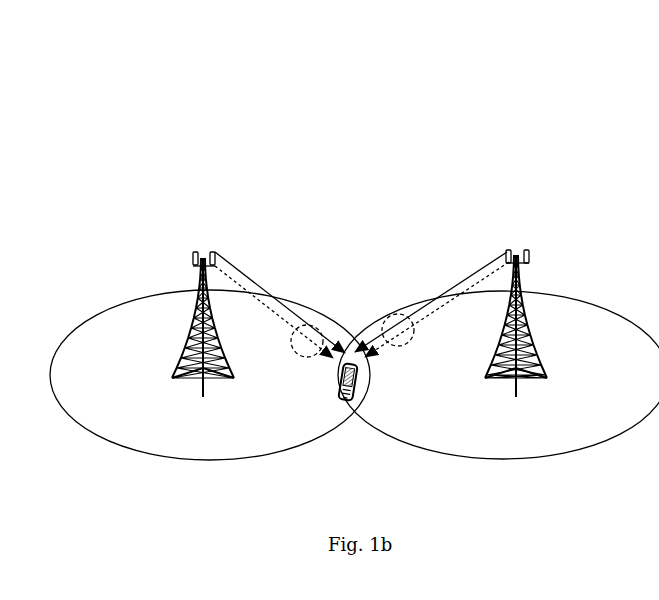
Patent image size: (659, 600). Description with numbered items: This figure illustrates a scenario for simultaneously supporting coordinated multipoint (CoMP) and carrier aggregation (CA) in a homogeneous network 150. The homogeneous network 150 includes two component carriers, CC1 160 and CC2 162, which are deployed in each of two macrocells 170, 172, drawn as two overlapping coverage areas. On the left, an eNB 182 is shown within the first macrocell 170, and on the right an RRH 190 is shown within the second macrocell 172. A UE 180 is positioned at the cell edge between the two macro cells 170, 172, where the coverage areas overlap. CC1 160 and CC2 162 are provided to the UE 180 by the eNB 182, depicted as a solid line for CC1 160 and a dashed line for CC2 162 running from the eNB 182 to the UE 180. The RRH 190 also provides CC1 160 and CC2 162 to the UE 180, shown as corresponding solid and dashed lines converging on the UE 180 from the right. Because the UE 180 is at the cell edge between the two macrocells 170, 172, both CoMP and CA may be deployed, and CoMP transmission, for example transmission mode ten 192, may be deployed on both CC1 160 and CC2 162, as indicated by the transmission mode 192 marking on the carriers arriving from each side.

The homogeneous network 150 is at (157, 110).
The CC1 160 is at (281, 270).
The CC2 162 is at (252, 340).
The macrocell 170 is at (222, 462).
The macrocell 172 is at (525, 460).
The UE 180 is at (350, 403).
The eNB 182 is at (168, 243).
The RRH 190 is at (552, 258).
The TM 10 192 is at (285, 376).